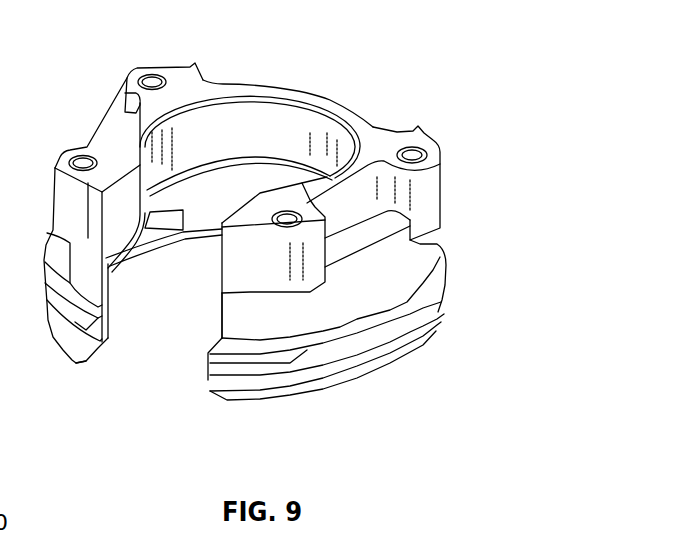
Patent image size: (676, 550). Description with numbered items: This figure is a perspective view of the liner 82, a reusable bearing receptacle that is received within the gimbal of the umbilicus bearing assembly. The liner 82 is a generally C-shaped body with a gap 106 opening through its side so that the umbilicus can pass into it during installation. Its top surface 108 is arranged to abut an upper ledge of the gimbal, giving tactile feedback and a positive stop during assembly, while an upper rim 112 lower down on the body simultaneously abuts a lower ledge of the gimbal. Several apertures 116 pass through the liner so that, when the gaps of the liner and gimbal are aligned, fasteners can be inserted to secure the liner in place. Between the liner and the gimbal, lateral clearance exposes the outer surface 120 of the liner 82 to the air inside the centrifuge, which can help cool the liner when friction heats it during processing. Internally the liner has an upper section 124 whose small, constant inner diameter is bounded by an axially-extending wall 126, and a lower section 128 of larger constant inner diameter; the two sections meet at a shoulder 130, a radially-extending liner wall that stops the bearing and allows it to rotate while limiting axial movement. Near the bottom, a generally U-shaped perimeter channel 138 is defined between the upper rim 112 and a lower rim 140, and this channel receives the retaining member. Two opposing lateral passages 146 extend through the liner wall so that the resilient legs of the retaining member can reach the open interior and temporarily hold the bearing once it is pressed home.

The liner 82 is at (106, 379).
The gap 106 is at (223, 335).
The top surface 108 is at (247, 85).
The upper rim 112 is at (317, 352).
The apertures 116 is at (85, 157).
The outer surface 120 is at (378, 301).
The upper section 124 is at (335, 97).
The axially-extending wall 126 is at (269, 140).
The lower section 128 is at (434, 258).
The shoulder 130 is at (128, 232).
The channel 138 is at (382, 352).
The lower rim 140 is at (237, 400).
The lateral passages 146 is at (166, 224).